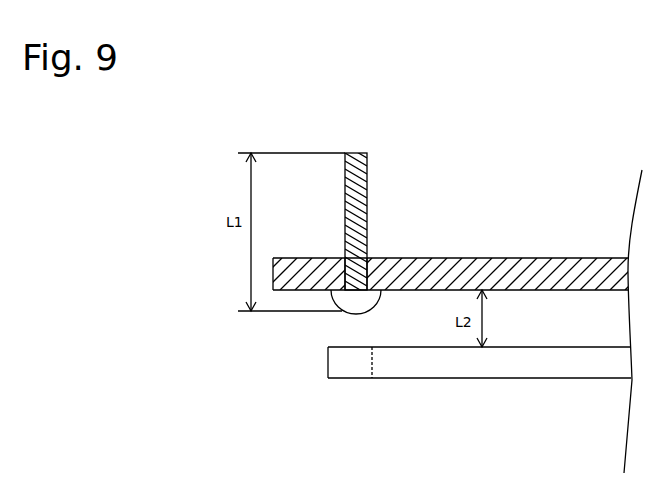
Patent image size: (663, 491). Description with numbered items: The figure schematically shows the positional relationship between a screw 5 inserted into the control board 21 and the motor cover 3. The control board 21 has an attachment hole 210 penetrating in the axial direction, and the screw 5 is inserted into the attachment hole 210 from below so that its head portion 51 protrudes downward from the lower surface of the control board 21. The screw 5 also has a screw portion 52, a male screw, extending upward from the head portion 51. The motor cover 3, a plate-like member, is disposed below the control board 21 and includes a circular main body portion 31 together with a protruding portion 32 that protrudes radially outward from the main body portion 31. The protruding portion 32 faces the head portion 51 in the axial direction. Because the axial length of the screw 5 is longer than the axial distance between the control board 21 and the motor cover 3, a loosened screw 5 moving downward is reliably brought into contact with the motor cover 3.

The screw 5 is at (331, 235).
The screw portion 52 is at (357, 156).
The head portion 51 is at (360, 299).
The control board 21 is at (512, 263).
The attachment hole 210 is at (371, 258).
The motor cover 3 is at (479, 416).
The main body portion 31 is at (501, 398).
The protruding portion 32 is at (346, 371).